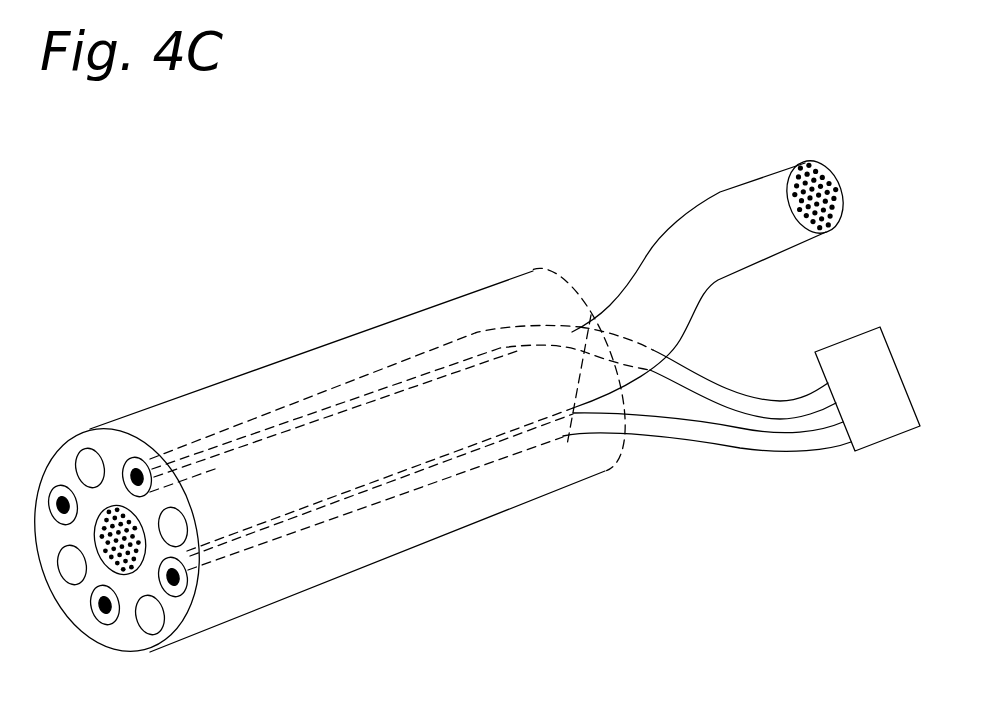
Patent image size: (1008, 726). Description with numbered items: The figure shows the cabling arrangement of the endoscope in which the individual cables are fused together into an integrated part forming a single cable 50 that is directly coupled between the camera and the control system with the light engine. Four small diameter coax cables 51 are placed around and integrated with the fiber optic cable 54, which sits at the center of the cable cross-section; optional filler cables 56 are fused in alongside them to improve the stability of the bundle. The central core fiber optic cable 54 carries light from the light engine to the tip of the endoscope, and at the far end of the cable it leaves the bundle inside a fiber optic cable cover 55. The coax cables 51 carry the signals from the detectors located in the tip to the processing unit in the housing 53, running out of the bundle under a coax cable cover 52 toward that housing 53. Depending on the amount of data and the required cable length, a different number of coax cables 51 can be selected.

The multi-lumen tubing body 50 is at (297, 572).
The coax cable 51 is at (60, 503).
The coax cable cover 52 is at (745, 441).
The housing 53 is at (875, 345).
The fiber optic cable 54 is at (110, 566).
The fiber optic cable cover 55 is at (745, 202).
The filler cable 56 is at (90, 468).